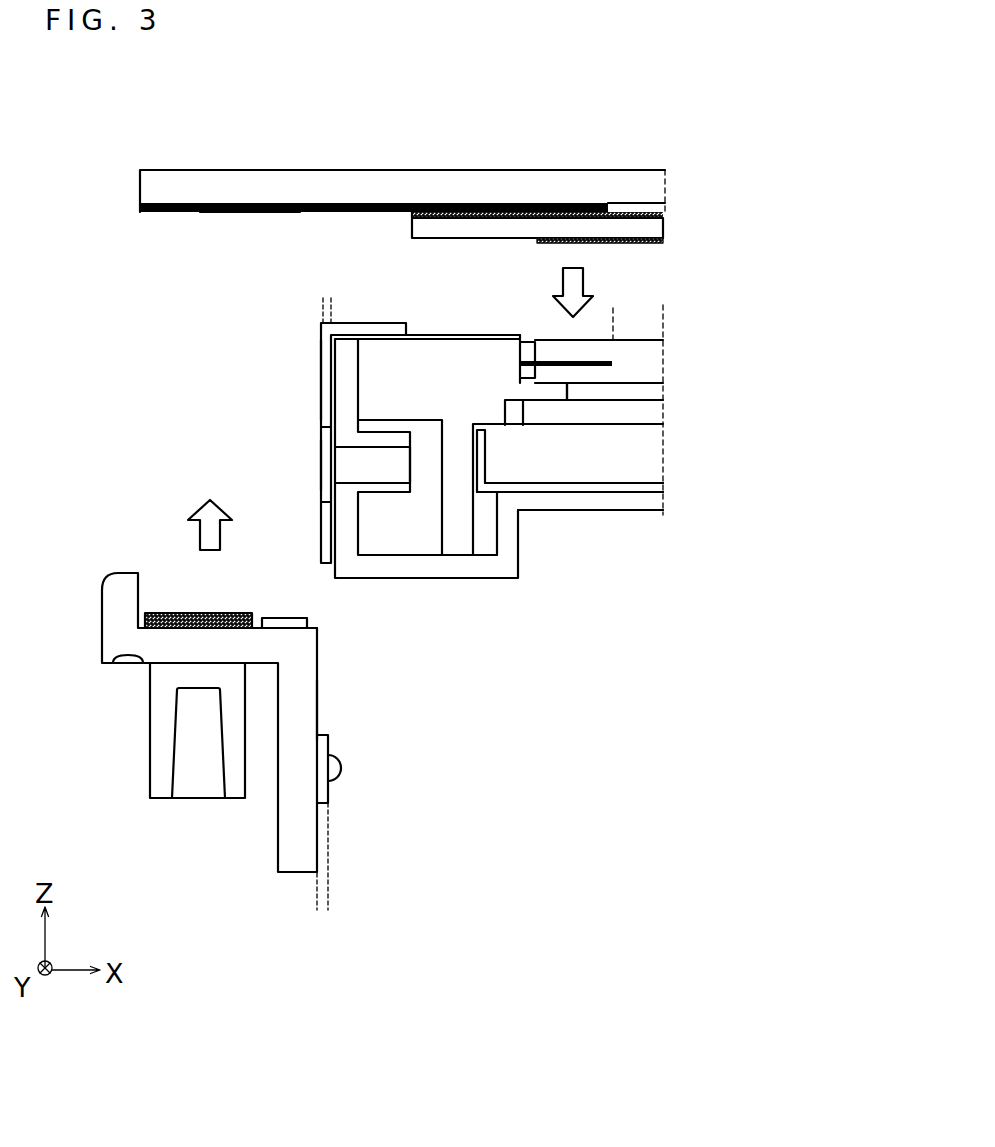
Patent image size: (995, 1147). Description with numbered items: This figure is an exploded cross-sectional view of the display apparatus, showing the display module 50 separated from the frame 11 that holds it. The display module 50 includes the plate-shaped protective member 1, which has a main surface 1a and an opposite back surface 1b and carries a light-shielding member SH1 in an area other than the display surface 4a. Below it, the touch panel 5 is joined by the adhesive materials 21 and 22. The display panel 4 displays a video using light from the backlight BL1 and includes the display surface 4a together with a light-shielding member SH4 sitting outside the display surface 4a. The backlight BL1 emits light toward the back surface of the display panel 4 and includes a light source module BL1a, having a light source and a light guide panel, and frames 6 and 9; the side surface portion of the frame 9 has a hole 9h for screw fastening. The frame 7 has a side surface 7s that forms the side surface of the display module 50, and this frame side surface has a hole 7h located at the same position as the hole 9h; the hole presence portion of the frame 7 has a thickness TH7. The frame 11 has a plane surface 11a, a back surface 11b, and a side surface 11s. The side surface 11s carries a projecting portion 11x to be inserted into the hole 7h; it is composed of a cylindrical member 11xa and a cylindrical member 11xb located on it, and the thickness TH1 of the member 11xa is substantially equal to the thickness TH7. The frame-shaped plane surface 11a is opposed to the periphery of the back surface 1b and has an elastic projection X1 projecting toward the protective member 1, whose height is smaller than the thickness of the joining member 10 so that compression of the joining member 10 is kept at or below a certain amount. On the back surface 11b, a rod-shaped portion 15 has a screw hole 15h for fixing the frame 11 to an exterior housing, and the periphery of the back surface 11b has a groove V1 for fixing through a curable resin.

The protective member 1 is at (660, 180).
The main surface 1a is at (248, 166).
The back surface 1b is at (248, 216).
The light-shielding member SH1 is at (378, 198).
The adhesive material 21 is at (665, 213).
The touch panel 5 is at (663, 229).
The adhesive material 22 is at (663, 242).
The frame 7 is at (406, 323).
The side surface 7s is at (318, 368).
The hole 7h is at (318, 465).
The thickness TH7 is at (340, 302).
The display module 50 is at (789, 148).
The display panel 4 is at (668, 340).
The display surface 4a is at (663, 308).
The light-shielding member SH4 is at (548, 356).
The frame 6 is at (548, 392).
The backlight BL1 is at (745, 378).
The light source module BL1a is at (673, 402).
The frame 9 is at (650, 503).
The hole 9h is at (414, 448).
The frame 11 is at (110, 575).
The plane surface 11a is at (282, 642).
The back surface 11b is at (172, 659).
The side surface 11s is at (320, 710).
The projecting portion 11x is at (445, 735).
The member 11xa is at (331, 800).
The member 11xb is at (339, 760).
The thickness TH1 is at (338, 906).
The projection X1 is at (284, 615).
The groove V1 is at (128, 668).
The joining member 10 is at (175, 611).
The rod-shaped portion 15 is at (150, 775).
The hole 15h is at (198, 803).